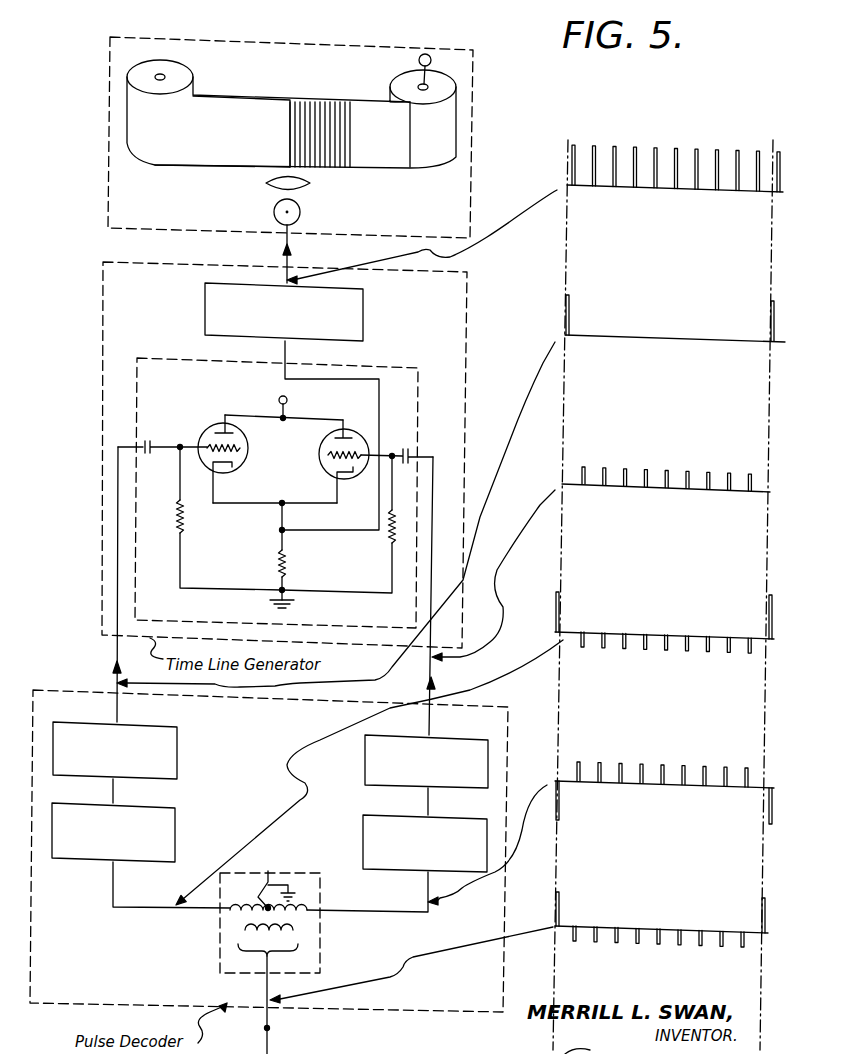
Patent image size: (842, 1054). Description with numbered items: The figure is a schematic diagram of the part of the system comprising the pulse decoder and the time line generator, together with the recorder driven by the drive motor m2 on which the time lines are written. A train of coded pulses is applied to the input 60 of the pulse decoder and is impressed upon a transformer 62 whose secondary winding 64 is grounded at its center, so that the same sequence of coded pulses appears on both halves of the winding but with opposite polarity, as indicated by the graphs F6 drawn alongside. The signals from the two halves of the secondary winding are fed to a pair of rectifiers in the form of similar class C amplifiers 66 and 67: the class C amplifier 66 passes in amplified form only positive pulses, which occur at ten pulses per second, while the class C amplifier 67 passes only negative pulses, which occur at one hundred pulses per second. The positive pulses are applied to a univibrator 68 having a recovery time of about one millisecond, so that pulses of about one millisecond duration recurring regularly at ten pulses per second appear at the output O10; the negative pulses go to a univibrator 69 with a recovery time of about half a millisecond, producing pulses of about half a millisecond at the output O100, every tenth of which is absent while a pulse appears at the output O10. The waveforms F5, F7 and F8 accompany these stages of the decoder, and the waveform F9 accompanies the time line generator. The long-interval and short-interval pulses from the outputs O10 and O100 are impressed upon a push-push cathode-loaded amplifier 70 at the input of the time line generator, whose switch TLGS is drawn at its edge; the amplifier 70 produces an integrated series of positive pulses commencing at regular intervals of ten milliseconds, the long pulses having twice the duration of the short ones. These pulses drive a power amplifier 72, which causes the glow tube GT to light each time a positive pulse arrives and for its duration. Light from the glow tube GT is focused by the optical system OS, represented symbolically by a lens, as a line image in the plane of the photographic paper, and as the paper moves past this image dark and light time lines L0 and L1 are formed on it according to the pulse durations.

The input 60 is at (270, 1029).
The transformer 62 is at (293, 930).
The secondary winding 64 is at (286, 912).
The class C amplifier 66 is at (175, 832).
The class C amplifier 67 is at (363, 836).
The univibrator 68 is at (177, 760).
The univibrator 69 is at (365, 767).
The push-push cathode-loaded amplifier 70 is at (411, 368).
The power amplifier 72 is at (363, 300).
The drive motor m2 is at (431, 61).
The time line L1 is at (298, 106).
The time line L0 is at (288, 140).
The optical system OS is at (310, 181).
The glow tube GT is at (300, 215).
The time line generator switch TLGS is at (103, 449).
The output O10 is at (111, 663).
The output O100 is at (432, 664).
The waveform F5 is at (689, 952).
The graphs F6 is at (706, 658).
The waveform F7 is at (718, 498).
The waveform F8 is at (712, 347).
The waveform F9 is at (704, 195).